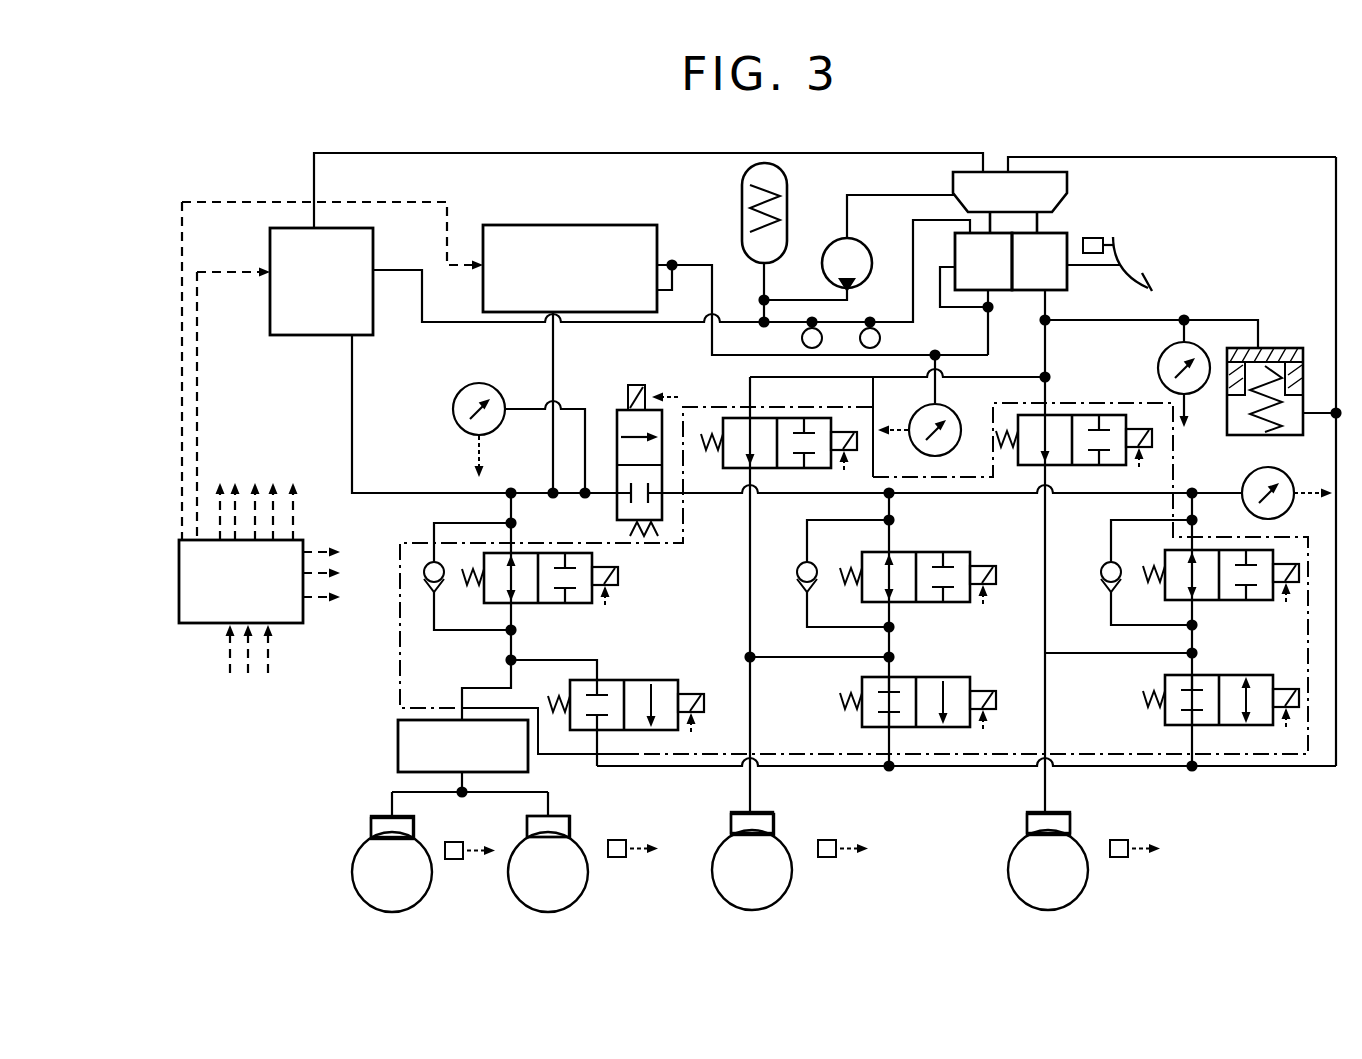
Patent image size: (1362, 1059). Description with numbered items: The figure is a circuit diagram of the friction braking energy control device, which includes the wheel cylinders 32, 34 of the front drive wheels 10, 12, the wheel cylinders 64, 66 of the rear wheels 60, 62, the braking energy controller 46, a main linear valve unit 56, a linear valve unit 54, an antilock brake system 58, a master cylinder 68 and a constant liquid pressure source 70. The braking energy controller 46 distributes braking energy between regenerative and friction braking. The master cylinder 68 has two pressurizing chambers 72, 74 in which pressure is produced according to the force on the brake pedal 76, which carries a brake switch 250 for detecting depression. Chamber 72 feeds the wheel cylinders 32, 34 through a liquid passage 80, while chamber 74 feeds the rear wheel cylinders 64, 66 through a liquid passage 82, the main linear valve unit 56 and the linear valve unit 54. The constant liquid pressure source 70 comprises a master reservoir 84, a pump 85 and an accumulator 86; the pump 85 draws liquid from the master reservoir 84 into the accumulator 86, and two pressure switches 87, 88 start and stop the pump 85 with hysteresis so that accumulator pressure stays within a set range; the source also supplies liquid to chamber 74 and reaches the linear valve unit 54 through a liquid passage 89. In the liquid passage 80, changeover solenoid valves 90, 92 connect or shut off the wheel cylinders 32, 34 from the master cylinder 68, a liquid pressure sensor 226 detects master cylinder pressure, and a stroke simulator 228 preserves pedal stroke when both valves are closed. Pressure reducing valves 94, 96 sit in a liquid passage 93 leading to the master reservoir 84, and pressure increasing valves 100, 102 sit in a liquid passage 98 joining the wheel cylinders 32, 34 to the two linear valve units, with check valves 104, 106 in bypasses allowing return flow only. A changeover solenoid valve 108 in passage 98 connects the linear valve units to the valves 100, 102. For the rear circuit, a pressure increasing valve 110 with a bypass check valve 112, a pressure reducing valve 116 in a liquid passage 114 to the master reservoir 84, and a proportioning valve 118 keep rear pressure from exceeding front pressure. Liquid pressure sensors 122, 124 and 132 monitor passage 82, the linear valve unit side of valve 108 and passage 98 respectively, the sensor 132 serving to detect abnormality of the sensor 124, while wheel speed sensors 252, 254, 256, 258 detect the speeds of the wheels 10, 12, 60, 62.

The drive wheel 10 is at (1085, 873).
The drive wheel 12 is at (788, 873).
The wheel cylinder 32 is at (1070, 812).
The wheel cylinder 34 is at (766, 813).
The braking energy controller 46 is at (205, 623).
The linear valve unit 54 is at (352, 229).
The main linear valve unit 56 is at (627, 225).
The antilock brake system 58 is at (1308, 625).
The rear wheel 60 is at (575, 880).
The rear wheel 62 is at (358, 852).
The wheel cylinder 64 is at (565, 815).
The wheel cylinder 66 is at (407, 818).
The master cylinder 68 is at (1052, 259).
The constant liquid pressure source 70 is at (815, 240).
The pressurizing chamber 72 is at (1067, 285).
The pressurizing chamber 74 is at (962, 257).
The brake pedal 76 is at (1153, 287).
The liquid passage 80 is at (1042, 370).
The liquid passage 82 is at (672, 265).
The master reservoir 84 is at (1064, 185).
The pump 85 is at (830, 253).
The accumulator 86 is at (742, 183).
The pressure switch 87 is at (802, 340).
The pressure switch 88 is at (882, 340).
The liquid passage 89 is at (624, 323).
The changeover solenoid valve 90 is at (1084, 422).
The changeover solenoid valve 92 is at (736, 426).
The liquid passage 93 is at (1334, 222).
The changeover solenoid valve 94 is at (1266, 680).
The changeover solenoid valve 96 is at (908, 680).
The liquid passage 98 is at (716, 495).
The changeover solenoid valve 100 is at (1228, 598).
The changeover solenoid valve 102 is at (953, 555).
The check valve 104 is at (1100, 560).
The check valve 106 is at (795, 560).
The changeover solenoid valve 108 is at (616, 413).
The changeover solenoid valve 110 is at (592, 556).
The check valve 112 is at (418, 557).
The liquid passage 114 is at (548, 660).
The changeover solenoid valve 116 is at (688, 660).
The proportioning valve 118 is at (398, 720).
The liquid pressure sensor 122 is at (926, 406).
The liquid pressure sensor 124 is at (455, 415).
The liquid pressure sensor 132 is at (1276, 482).
The liquid pressure sensor 226 is at (1162, 355).
The stroke simulator 228 is at (1317, 365).
The brake switch 250 is at (1105, 232).
The wheel speed sensor 252 is at (1130, 851).
The wheel speed sensor 254 is at (838, 851).
The wheel speed sensor 256 is at (626, 850).
The wheel speed sensor 258 is at (455, 859).